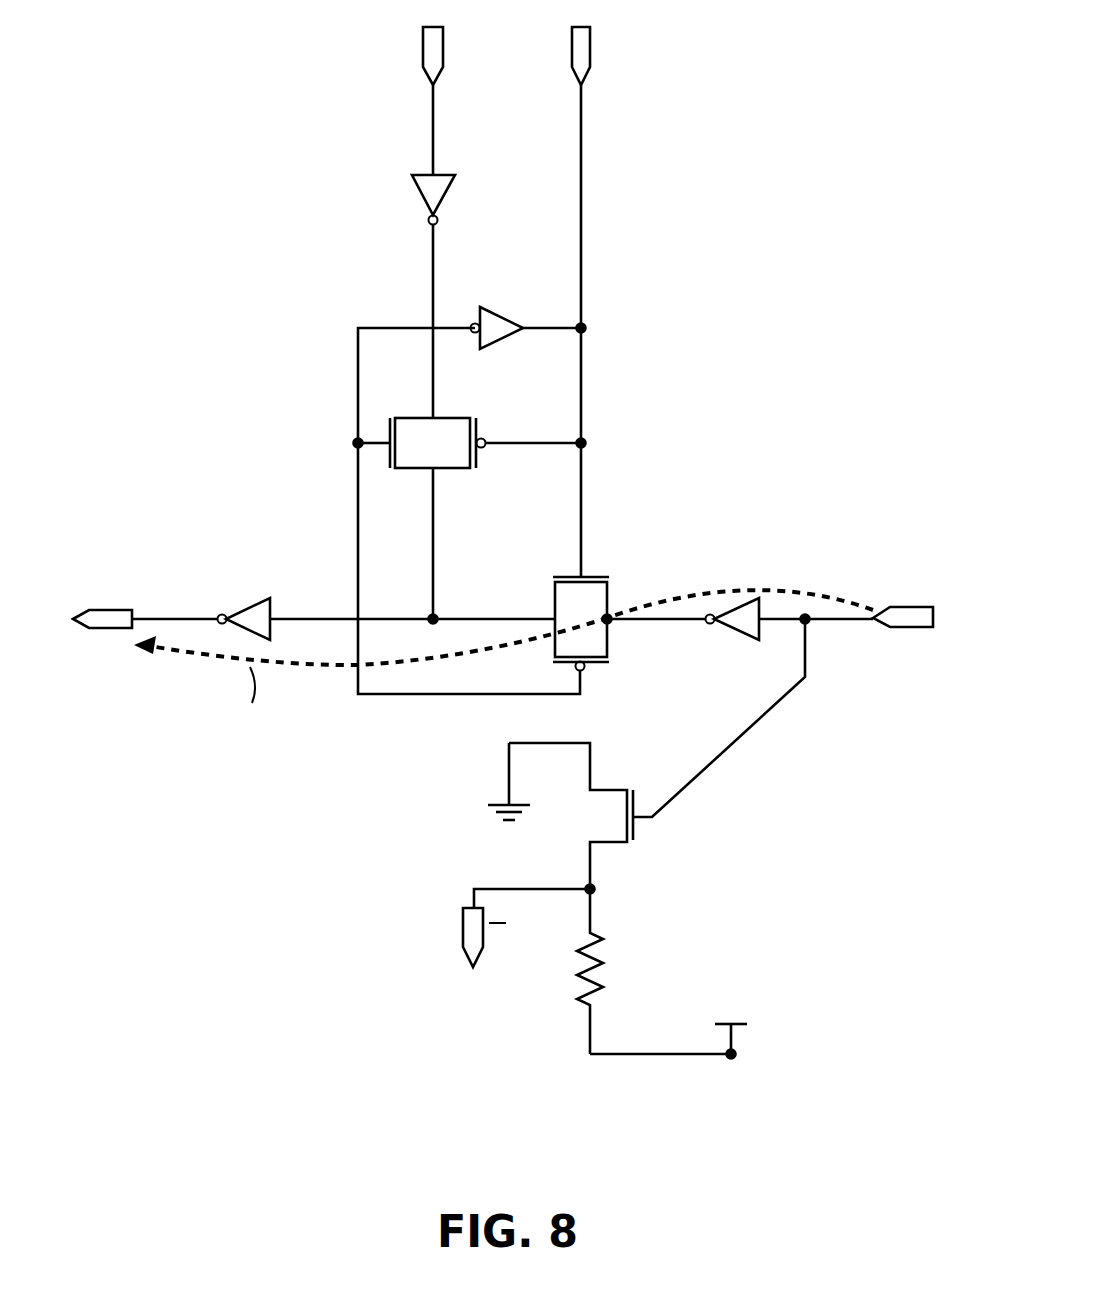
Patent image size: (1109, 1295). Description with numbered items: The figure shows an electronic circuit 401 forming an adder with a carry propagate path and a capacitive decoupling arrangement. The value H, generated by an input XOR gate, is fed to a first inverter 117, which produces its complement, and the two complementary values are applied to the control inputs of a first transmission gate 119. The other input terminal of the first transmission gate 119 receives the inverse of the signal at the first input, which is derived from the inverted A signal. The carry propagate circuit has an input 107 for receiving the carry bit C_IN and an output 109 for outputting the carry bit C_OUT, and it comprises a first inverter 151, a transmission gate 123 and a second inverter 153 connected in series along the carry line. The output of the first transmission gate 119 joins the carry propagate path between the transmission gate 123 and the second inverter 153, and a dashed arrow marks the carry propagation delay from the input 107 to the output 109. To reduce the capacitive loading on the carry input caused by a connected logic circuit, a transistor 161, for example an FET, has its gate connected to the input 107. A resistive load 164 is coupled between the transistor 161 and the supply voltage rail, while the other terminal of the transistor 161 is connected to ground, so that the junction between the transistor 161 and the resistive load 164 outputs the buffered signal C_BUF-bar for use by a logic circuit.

The carry logic circuit 401 is at (820, 350).
The first inverter 117 is at (508, 322).
The first transmission gate 119 is at (413, 470).
The transmission gate 123 is at (597, 573).
The first inverter 151 is at (743, 612).
The second inverter 153 is at (248, 602).
The output 109 is at (105, 612).
The input 107 is at (907, 612).
The transistor 161 is at (638, 830).
The resistive load 164 is at (597, 978).